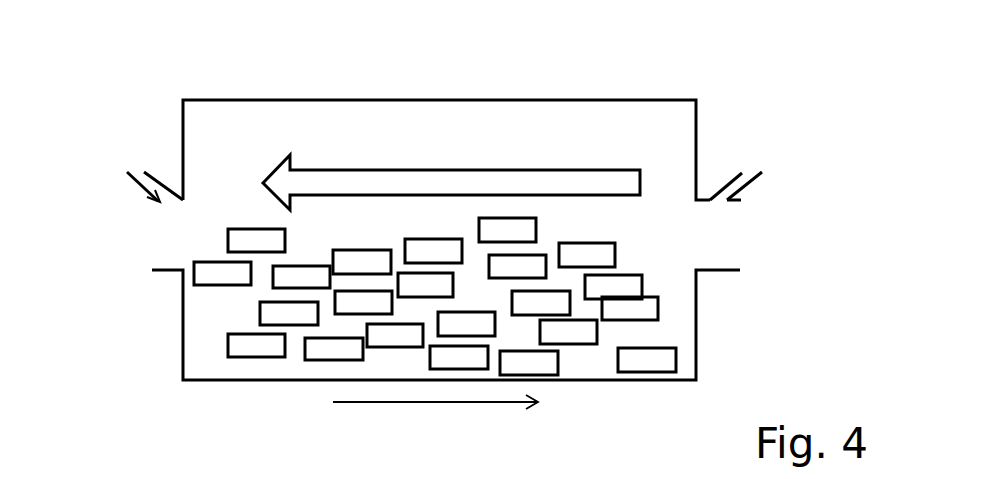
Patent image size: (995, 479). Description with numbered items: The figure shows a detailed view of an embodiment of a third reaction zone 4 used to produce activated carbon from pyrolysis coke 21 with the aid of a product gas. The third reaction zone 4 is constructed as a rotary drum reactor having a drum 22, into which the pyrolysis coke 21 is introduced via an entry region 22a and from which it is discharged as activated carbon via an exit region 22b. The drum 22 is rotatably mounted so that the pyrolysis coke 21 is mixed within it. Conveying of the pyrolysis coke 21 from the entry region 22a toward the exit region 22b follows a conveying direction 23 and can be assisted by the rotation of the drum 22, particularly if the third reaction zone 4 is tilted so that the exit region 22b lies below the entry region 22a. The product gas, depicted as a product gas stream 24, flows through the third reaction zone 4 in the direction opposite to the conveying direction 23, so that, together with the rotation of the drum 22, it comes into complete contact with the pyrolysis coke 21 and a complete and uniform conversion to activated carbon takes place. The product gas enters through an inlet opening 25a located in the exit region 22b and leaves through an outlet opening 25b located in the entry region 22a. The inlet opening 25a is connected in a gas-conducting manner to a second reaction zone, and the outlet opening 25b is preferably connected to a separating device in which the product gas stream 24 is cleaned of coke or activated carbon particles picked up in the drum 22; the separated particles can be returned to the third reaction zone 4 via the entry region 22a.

The third reaction zone 4 is at (106, 89).
The pyrolysis coke 21 is at (248, 358).
The drum 22 is at (475, 100).
The entry region 22a is at (168, 272).
The exit region 22b is at (730, 271).
The conveying direction 23 is at (455, 403).
The product gas stream 24 is at (588, 168).
The inlet opening 25a is at (748, 187).
The outlet opening 25b is at (147, 188).